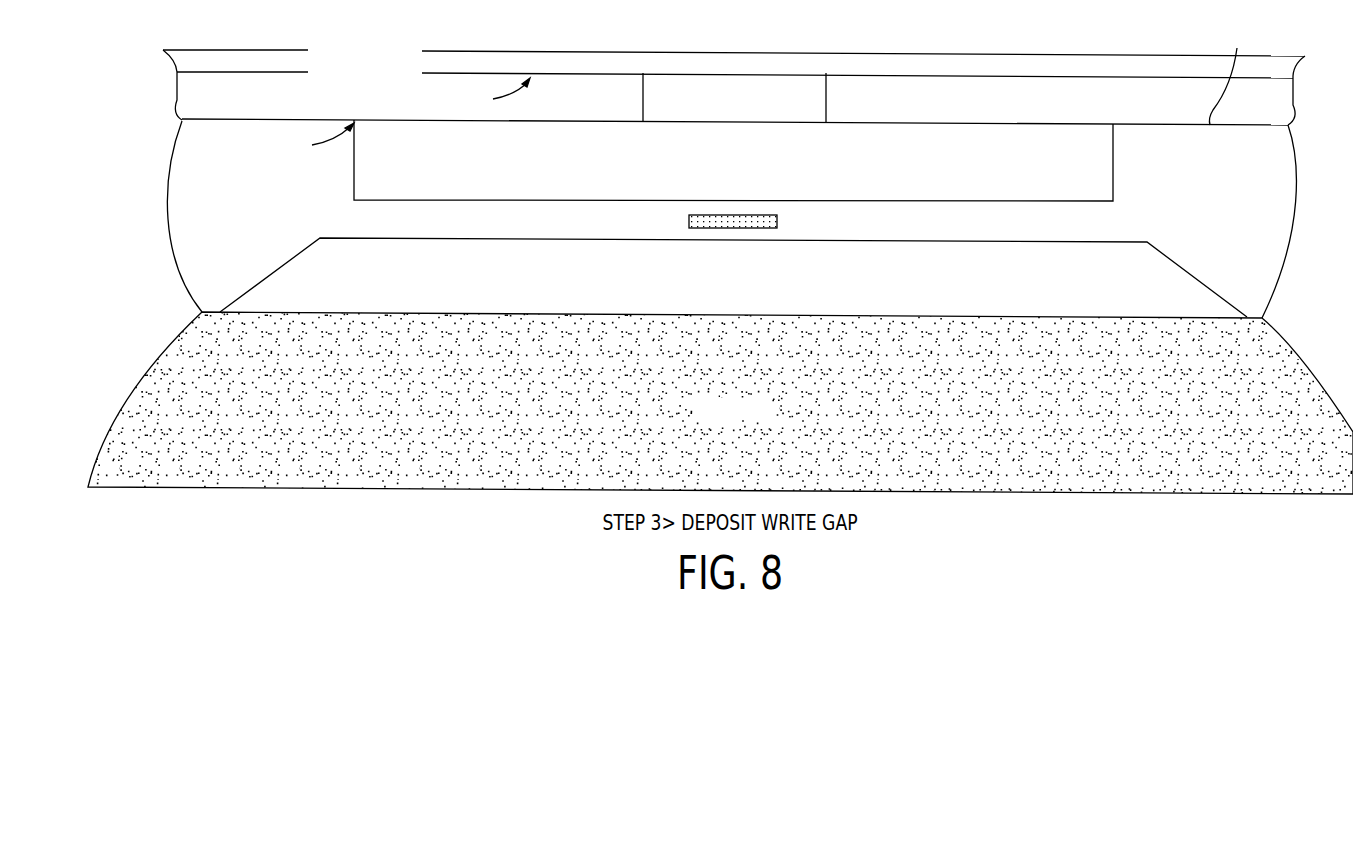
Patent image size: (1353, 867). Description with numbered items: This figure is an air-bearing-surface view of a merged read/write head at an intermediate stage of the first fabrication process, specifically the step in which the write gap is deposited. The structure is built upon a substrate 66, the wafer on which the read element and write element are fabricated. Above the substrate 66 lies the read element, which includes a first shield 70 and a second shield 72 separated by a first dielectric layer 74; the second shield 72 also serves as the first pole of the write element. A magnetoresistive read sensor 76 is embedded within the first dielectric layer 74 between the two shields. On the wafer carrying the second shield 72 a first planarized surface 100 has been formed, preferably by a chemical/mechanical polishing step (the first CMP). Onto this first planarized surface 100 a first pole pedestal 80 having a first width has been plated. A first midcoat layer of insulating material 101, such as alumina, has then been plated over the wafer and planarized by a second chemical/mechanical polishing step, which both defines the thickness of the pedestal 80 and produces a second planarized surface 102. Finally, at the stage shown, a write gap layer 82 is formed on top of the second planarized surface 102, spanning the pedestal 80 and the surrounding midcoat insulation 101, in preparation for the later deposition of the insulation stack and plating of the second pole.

The substrate 66 is at (1278, 352).
The first shield 70 is at (1182, 290).
The second shield 72 is at (1098, 173).
The first dielectric layer 74 is at (1283, 229).
The magnetoresistive read sensor 76 is at (738, 229).
The first pole pedestal 80 is at (812, 107).
The write gap layer 82 is at (1022, 66).
The first planarized surface 100 is at (735, 72).
The first midcoat layer of insulating material 101 is at (1287, 98).
The second planarized surface 102 is at (1167, 77).